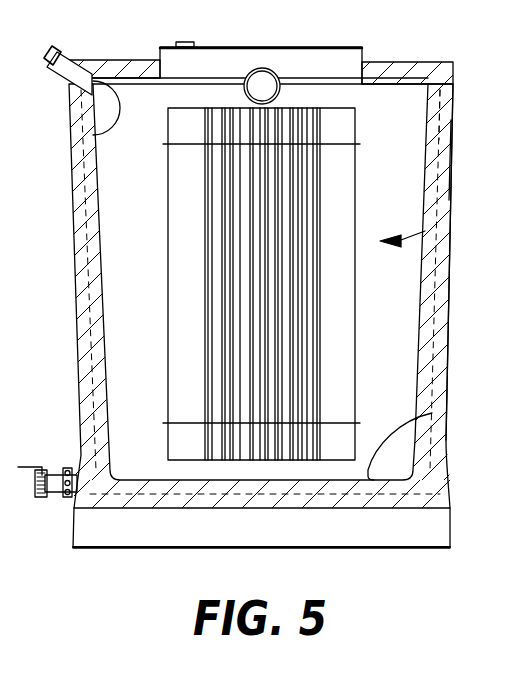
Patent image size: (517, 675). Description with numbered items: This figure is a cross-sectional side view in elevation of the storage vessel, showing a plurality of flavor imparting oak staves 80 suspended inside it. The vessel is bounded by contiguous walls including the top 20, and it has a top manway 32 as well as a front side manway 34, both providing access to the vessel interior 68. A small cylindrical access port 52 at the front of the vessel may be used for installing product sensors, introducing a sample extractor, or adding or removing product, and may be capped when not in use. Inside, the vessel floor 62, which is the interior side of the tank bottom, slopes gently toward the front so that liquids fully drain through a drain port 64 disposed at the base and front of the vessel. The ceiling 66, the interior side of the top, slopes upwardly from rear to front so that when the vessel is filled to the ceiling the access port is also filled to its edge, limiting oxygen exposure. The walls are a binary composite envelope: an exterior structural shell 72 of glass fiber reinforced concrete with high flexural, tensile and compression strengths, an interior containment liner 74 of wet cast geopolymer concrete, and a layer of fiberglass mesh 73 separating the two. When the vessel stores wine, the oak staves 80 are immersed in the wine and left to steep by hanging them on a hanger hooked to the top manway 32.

The top 20 is at (388, 62).
The top manway 32 is at (250, 47).
The front side manway 34 is at (78, 358).
The access port 52 is at (65, 56).
The vessel floor 62 is at (432, 413).
The drain port 64 is at (55, 473).
The ceiling 66 is at (72, 133).
The vessel interior 68 is at (425, 231).
The exterior structural shell 72 is at (451, 173).
The fiberglass mesh 73 is at (450, 148).
The interior containment liner 74 is at (443, 118).
The flavor imparting oak staves 80 is at (205, 157).